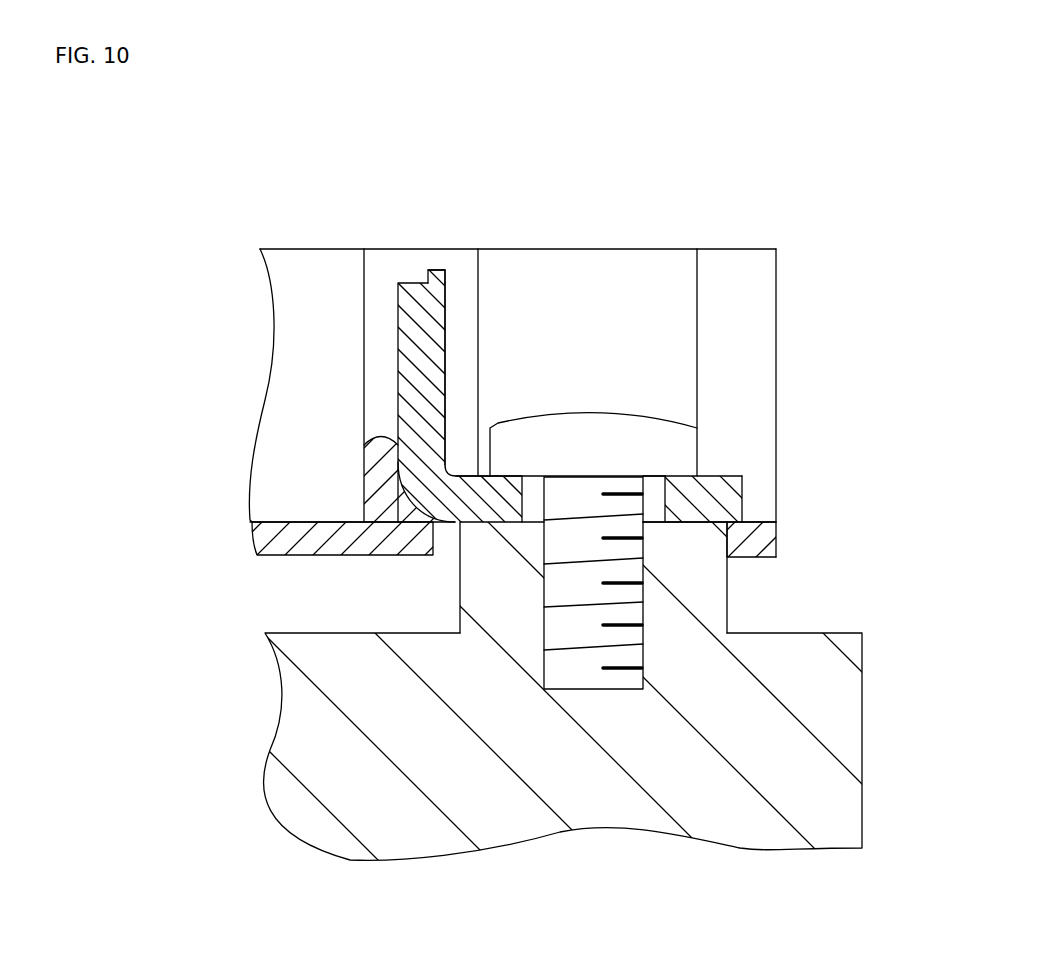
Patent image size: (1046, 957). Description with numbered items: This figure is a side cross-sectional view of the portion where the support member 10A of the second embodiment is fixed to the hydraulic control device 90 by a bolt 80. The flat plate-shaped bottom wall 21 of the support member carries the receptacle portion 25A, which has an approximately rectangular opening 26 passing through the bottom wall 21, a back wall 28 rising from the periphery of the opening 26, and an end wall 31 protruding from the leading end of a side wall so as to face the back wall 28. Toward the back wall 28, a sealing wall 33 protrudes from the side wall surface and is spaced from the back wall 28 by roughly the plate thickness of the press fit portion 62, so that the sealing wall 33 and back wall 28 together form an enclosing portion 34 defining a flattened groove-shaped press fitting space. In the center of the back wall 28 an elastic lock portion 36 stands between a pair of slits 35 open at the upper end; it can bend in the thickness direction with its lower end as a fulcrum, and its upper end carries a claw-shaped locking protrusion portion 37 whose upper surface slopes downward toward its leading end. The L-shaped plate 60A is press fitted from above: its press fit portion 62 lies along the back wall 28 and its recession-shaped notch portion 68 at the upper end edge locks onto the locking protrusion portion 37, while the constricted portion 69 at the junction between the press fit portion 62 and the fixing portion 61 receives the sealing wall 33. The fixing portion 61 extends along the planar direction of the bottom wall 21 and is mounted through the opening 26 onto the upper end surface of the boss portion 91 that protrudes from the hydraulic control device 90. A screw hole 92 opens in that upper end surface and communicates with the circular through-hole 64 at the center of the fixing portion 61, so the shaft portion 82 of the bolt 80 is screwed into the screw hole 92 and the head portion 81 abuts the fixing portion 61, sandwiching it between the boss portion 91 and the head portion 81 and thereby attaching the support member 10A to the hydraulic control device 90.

The support member 10A is at (516, 130).
The receptacle portion 25A is at (751, 230).
The end wall 31 is at (710, 268).
The elastic lock portion 36 is at (363, 313).
The plate 60A is at (397, 285).
The notch portion 68 is at (425, 283).
The locking protrusion portion 37 is at (430, 272).
The press fit portion 62 is at (440, 327).
The sealing wall 33 is at (480, 345).
The enclosing portion 34 is at (447, 390).
The slit 35 is at (381, 425).
The back wall 28 is at (373, 460).
The bottom wall 21 is at (263, 535).
The constricted portion 69 is at (427, 497).
The shaft portion 82 is at (553, 564).
The screw hole 92 is at (544, 597).
The bolt 80 is at (660, 417).
The head portion 81 is at (683, 442).
The through-hole 64 is at (666, 493).
The fixing portion 61 is at (737, 498).
The opening 26 is at (745, 538).
The boss portion 91 is at (713, 613).
The hydraulic control device 90 is at (862, 753).